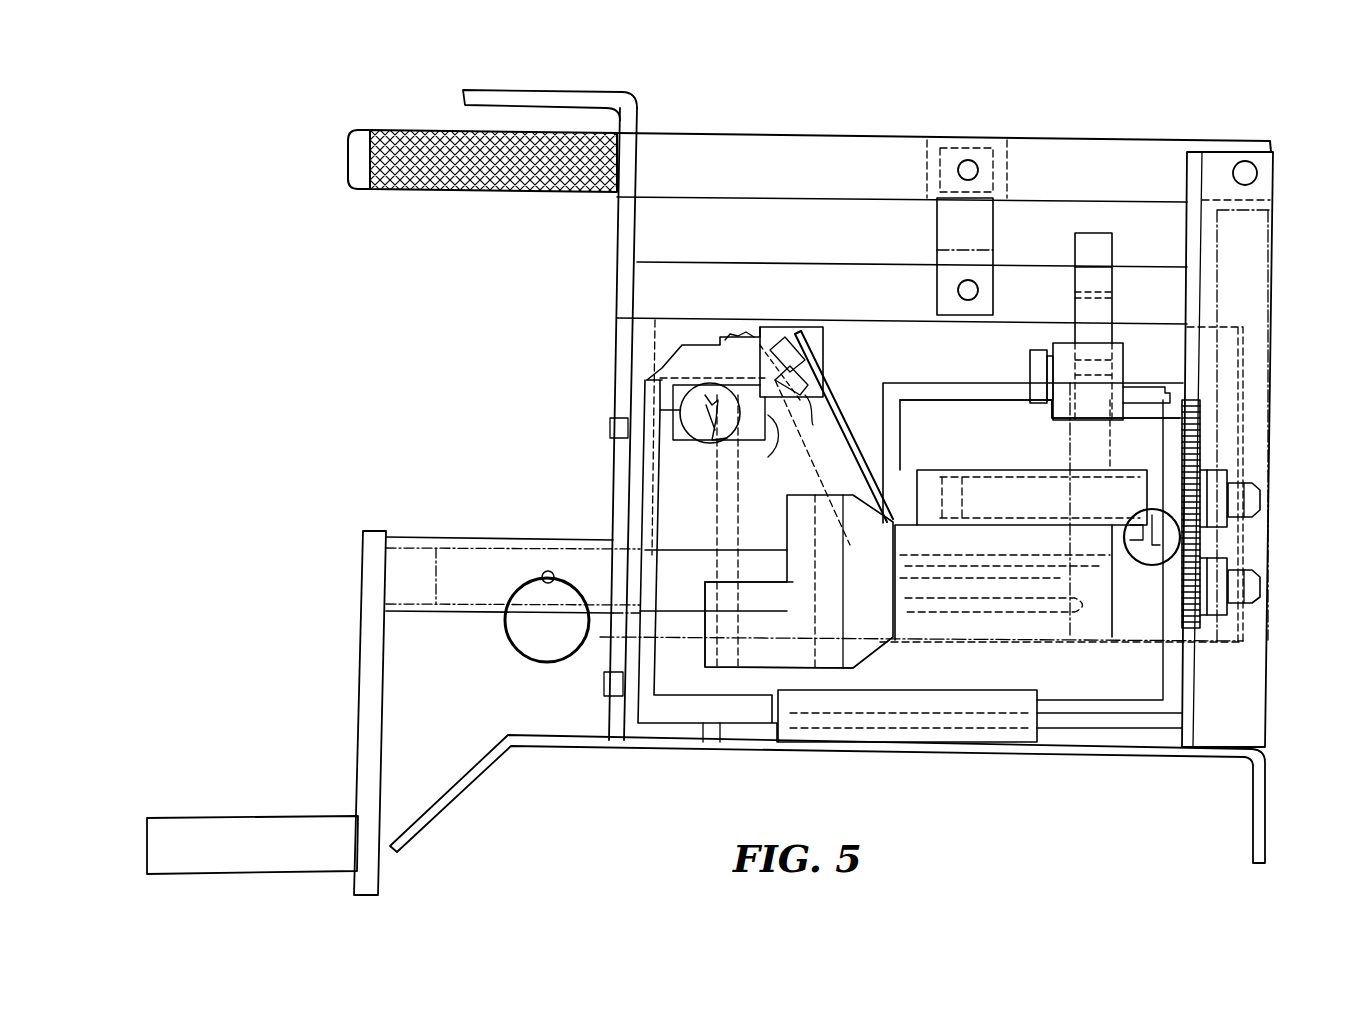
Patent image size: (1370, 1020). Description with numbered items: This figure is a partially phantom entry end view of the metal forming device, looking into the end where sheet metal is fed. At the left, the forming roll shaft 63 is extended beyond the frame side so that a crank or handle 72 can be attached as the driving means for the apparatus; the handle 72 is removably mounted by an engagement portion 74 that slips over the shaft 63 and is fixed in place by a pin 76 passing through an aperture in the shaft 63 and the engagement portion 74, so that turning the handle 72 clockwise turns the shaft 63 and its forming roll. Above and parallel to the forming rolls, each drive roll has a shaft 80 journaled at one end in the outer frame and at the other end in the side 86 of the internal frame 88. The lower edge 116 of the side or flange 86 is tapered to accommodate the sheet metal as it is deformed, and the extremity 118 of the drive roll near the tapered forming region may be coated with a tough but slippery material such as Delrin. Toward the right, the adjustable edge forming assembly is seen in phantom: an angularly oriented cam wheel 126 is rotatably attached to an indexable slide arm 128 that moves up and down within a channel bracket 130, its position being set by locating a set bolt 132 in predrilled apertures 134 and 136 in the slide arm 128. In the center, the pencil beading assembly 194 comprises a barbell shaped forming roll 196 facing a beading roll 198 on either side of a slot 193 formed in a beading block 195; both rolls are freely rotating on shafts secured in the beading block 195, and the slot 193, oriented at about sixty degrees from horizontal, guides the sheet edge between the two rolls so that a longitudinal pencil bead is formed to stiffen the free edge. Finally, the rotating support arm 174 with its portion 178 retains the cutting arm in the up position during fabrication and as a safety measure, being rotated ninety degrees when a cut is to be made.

The shaft 63 is at (469, 557).
The crank or handle 72 is at (372, 570).
The engagement portion 74 is at (474, 612).
The pin 76 is at (548, 572).
The shaft 80 is at (1040, 490).
The side or flange 86 is at (890, 432).
The internal frame 88 is at (985, 383).
The lower edge 116 is at (893, 500).
The extremity 118 is at (913, 478).
The cam wheel 126 is at (1123, 432).
The indexable slide arm 128 is at (1097, 247).
The channel bracket 130 is at (1113, 367).
The set bolt 132 is at (1038, 354).
The aperture 134 is at (1082, 292).
The aperture 136 is at (1100, 368).
The rotating support arm 174 is at (628, 100).
The portion 178 is at (488, 97).
The slot 193 is at (833, 428).
The pencil beading assembly 194 is at (815, 300).
The beading block 195 is at (828, 466).
The barbell shaped forming roll 196 is at (800, 362).
The beading roll 198 is at (777, 458).